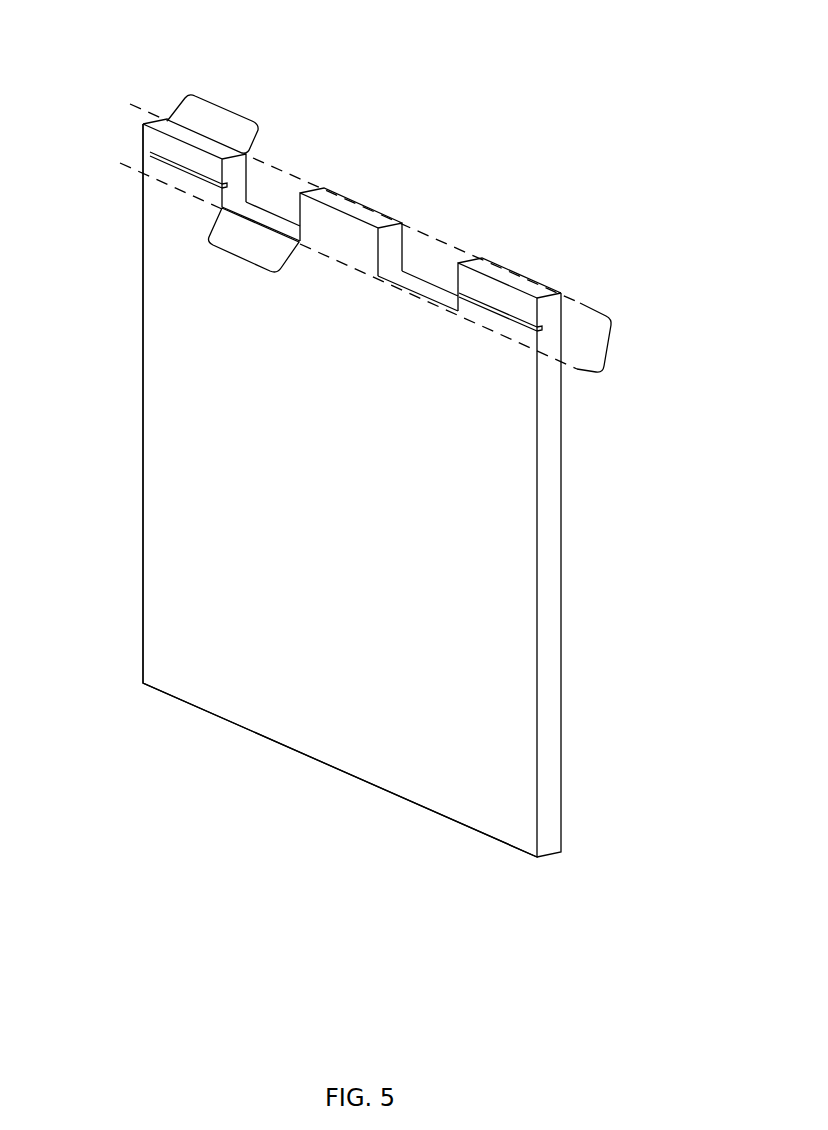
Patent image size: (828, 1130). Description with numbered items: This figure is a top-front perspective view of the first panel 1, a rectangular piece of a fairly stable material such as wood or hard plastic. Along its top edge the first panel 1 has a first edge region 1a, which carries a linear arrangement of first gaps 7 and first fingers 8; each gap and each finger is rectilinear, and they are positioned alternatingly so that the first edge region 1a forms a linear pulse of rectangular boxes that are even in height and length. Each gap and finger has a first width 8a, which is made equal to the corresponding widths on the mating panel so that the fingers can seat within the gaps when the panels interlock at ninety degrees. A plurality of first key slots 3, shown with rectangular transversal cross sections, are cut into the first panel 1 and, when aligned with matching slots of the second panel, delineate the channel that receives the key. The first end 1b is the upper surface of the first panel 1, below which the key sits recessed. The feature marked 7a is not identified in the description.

The first panel 1 is at (547, 637).
The first edge region 1a is at (605, 350).
The first end 1b is at (200, 470).
The first key slots 3 is at (160, 158).
The first gaps 7 is at (364, 213).
The flap of tab 7a is at (230, 110).
The first fingers 8 is at (267, 205).
The first width 8a is at (238, 257).